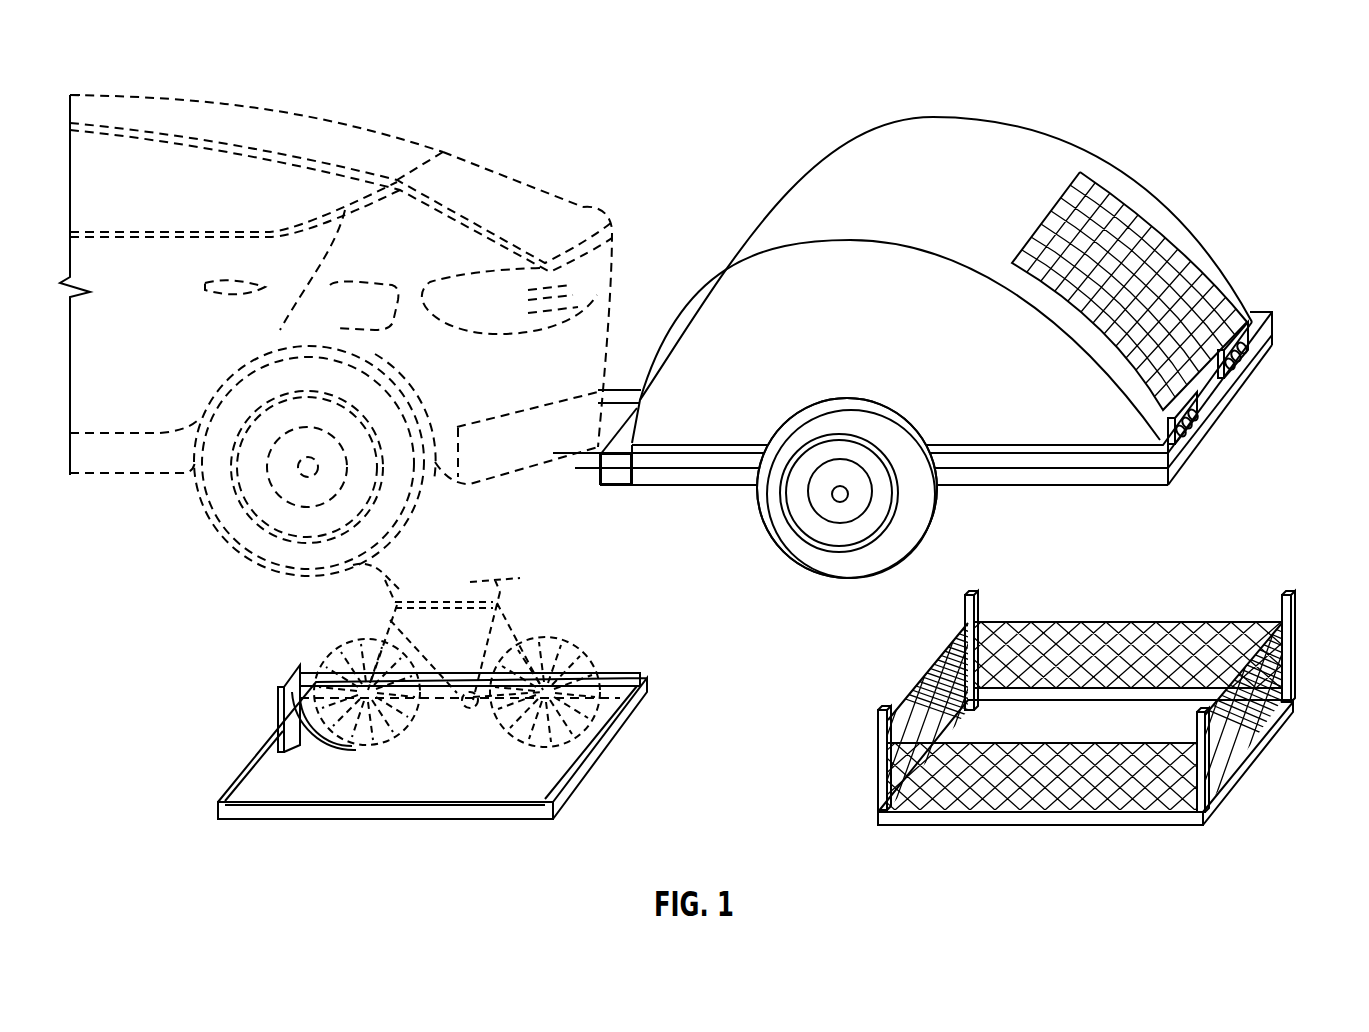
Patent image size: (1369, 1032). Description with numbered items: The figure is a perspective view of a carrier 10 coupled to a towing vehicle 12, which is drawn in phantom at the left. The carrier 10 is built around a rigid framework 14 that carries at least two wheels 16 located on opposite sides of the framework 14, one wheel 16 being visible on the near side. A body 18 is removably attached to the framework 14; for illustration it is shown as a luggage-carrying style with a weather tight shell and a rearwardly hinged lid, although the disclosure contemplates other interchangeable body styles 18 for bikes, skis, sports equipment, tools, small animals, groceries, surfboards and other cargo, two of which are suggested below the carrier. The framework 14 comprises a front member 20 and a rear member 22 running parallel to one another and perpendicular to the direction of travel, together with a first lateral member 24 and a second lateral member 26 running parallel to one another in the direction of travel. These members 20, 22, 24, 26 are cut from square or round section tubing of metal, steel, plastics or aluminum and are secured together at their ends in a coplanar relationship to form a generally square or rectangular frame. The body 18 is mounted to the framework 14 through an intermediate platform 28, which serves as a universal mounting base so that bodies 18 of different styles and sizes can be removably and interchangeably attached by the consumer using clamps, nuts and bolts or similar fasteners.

The carrier 10 is at (655, 90).
The towing vehicle 12 is at (640, 90).
The rigid framework 14 is at (633, 478).
The wheels 16 is at (800, 563).
The body 18 is at (1128, 194).
The front member 20 is at (603, 478).
The rear member 22 is at (1250, 372).
The first lateral member 24 is at (1172, 473).
The second lateral member 26 is at (1272, 337).
The intermediate platform 28 is at (1213, 404).